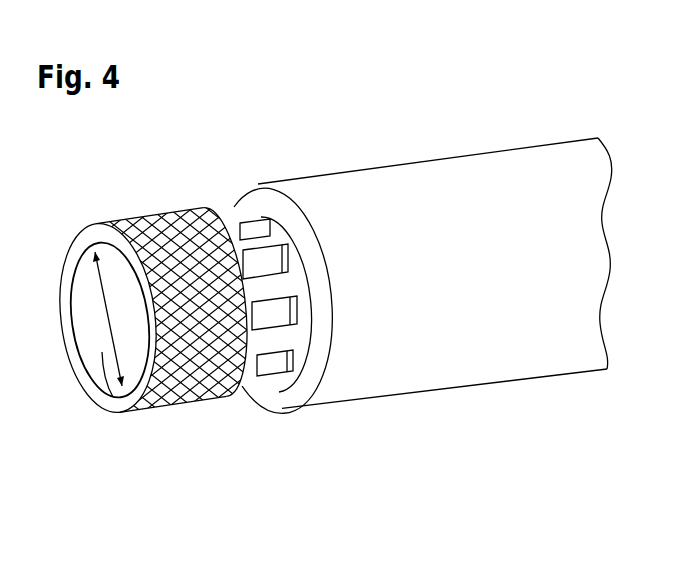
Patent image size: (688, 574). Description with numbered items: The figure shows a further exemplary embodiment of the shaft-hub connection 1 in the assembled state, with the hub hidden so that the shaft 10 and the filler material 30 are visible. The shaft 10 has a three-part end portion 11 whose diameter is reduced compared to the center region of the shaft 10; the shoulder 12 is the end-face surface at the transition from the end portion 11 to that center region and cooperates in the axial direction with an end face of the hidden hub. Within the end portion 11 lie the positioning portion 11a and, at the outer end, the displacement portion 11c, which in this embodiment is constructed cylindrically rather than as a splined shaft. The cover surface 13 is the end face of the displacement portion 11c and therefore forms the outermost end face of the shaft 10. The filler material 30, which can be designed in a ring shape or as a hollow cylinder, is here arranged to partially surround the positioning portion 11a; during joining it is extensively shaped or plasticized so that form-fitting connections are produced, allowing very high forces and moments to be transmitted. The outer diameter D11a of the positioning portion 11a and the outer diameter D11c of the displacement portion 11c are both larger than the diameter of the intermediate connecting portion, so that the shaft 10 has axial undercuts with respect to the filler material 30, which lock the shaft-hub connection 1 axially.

The shaft-hub connection 1 is at (338, 490).
The shaft 10 is at (447, 175).
The end portion 11 is at (197, 434).
The positioning portion 11a is at (267, 355).
The displacement portion 11c is at (157, 404).
The shoulder 12 is at (274, 203).
The cover surface 13 is at (89, 327).
The filler material 30 is at (172, 215).
The outer diameter of the positioning portion D11a is at (256, 347).
The outer diameter of the displacement portion D11c is at (108, 400).